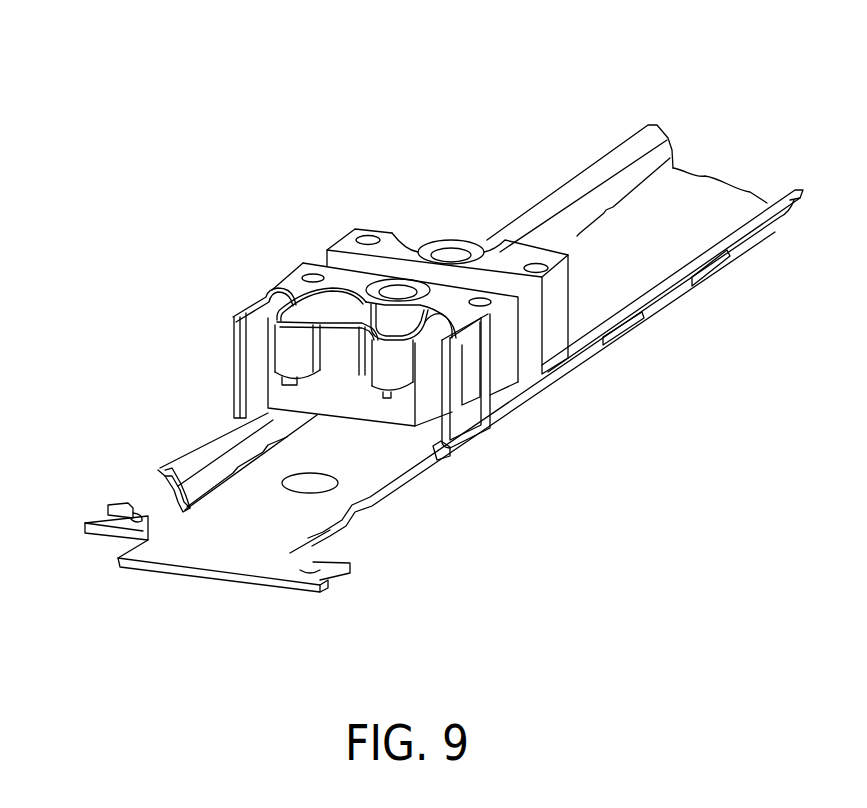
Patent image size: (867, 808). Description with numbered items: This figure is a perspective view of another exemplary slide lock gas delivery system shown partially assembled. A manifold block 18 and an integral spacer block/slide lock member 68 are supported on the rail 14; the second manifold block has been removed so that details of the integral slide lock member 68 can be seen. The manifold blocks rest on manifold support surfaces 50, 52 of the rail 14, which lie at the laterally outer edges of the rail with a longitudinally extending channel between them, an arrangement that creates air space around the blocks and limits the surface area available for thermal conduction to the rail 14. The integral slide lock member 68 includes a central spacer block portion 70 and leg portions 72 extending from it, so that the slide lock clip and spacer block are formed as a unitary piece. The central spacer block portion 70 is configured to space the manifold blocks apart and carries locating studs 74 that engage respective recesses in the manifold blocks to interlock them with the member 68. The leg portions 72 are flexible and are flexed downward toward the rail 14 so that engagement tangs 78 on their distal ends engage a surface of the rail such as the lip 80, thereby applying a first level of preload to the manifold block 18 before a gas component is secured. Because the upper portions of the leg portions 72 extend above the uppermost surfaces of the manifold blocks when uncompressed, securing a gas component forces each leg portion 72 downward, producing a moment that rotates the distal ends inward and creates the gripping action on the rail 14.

The rail 14 is at (690, 198).
The manifold block 18 is at (348, 230).
The manifold support surface 50 is at (225, 435).
The manifold support surface 52 is at (440, 460).
The integral spacer block/slide lock member 68 is at (293, 310).
The central spacer block portion 70 is at (342, 366).
The leg portions 72 is at (235, 348).
The locating studs 74 is at (290, 378).
The engagement tangs 78 is at (478, 438).
The lip 80 is at (157, 470).